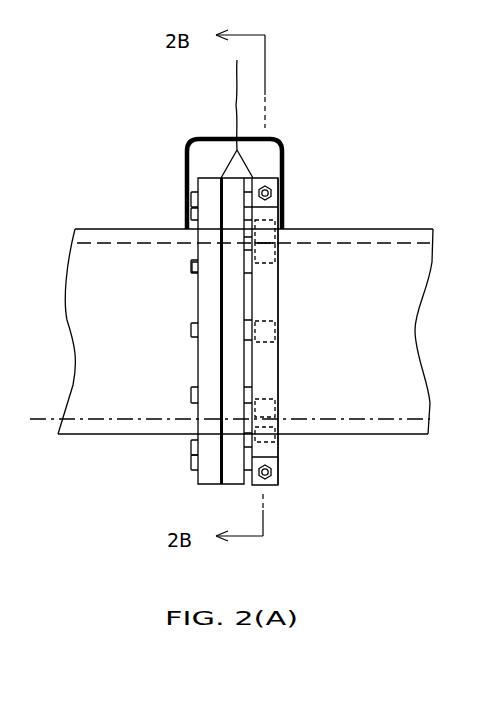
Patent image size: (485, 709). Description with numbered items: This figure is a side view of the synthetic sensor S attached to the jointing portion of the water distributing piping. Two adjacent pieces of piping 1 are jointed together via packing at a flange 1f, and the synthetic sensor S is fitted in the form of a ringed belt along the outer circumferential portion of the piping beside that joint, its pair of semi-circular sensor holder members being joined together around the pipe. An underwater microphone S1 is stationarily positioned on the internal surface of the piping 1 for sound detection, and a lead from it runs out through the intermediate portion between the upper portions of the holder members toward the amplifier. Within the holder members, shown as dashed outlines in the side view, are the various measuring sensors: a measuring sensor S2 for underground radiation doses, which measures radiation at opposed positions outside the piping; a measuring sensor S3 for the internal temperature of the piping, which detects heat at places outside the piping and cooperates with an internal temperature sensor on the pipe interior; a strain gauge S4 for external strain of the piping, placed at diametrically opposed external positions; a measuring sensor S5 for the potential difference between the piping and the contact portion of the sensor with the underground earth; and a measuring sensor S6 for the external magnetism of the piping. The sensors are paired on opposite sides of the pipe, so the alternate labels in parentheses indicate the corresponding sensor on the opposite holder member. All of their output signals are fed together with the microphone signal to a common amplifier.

The piping 1 is at (100, 228).
The flange 1f is at (233, 488).
The synthetic sensor S is at (281, 280).
The underwater microphone S1 is at (191, 263).
The measuring sensor for underground radiation doses S2 is at (287, 215).
The measuring sensor for internal temperature of the piping S3 is at (283, 450).
The measuring sensor for external strain of the piping S4 is at (281, 289).
The measuring sensor for potential difference S5 is at (281, 406).
The measuring sensor for external magnetism of the piping S6 is at (280, 330).